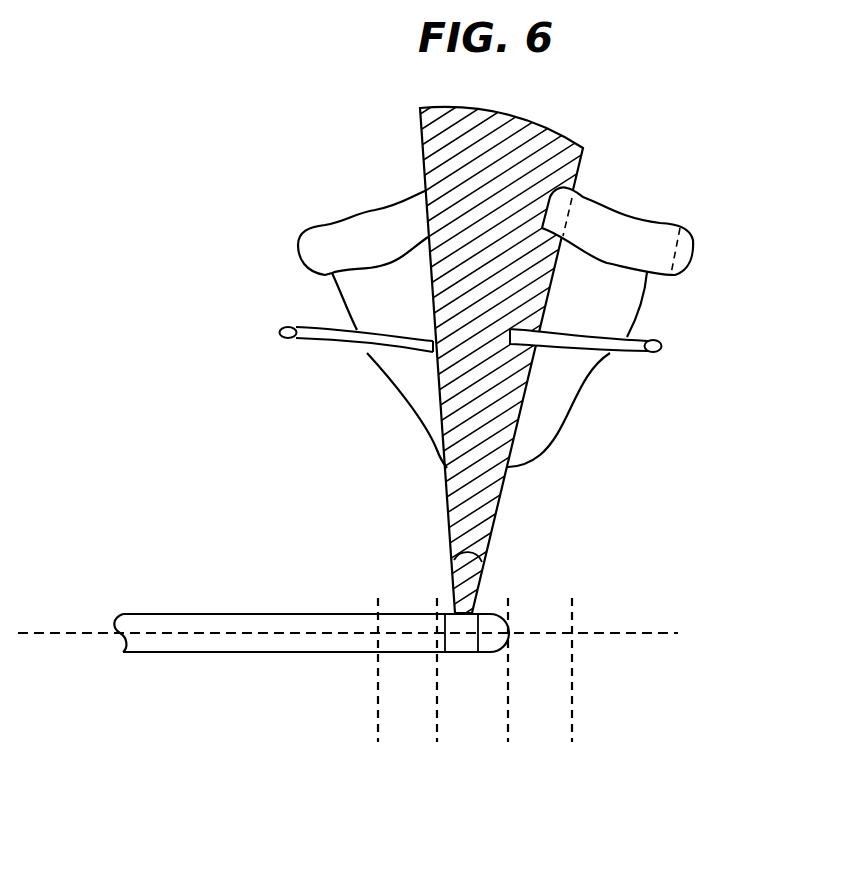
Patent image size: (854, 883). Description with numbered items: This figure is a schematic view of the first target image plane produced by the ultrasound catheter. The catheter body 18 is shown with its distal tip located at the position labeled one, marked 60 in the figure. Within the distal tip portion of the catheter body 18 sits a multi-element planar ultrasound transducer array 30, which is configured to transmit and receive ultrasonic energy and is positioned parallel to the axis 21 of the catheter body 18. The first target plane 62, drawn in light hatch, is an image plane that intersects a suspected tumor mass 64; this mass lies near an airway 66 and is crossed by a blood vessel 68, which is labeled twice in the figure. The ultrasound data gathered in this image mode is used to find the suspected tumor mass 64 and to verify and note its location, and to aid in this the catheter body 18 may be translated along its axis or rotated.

The catheter body 18 is at (162, 645).
The axis 21 is at (663, 633).
The multi-element planar ultrasound transducer array 30 is at (469, 653).
The position "1" marker 60 is at (543, 792).
The first target plane 62 is at (551, 155).
The suspected tumor mass 64 is at (643, 309).
The airway 66 is at (689, 243).
The blood vessel 68 is at (313, 342).